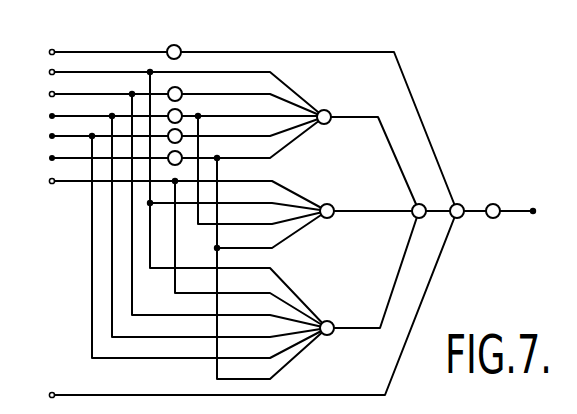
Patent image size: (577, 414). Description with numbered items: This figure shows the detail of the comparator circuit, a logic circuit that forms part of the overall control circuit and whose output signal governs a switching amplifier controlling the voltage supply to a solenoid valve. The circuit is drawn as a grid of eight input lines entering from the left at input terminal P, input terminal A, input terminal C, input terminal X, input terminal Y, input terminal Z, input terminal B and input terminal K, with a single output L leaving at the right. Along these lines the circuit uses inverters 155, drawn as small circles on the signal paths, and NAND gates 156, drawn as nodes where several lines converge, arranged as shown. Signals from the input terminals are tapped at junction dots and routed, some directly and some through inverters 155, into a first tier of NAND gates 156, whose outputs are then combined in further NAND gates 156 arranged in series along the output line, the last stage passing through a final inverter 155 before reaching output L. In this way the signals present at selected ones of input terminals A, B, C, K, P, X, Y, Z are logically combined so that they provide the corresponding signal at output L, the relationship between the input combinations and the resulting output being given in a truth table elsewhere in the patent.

The inverter 155 is at (179, 47).
The NAND gate 156 is at (329, 112).
The input terminal P is at (39, 49).
The input terminal A is at (39, 74).
The input terminal C is at (39, 94).
The input terminal X is at (39, 116).
The input terminal Y is at (39, 138).
The input terminal Z is at (39, 161).
The input terminal B is at (39, 183).
The input terminal K is at (39, 394).
The output L is at (541, 213).